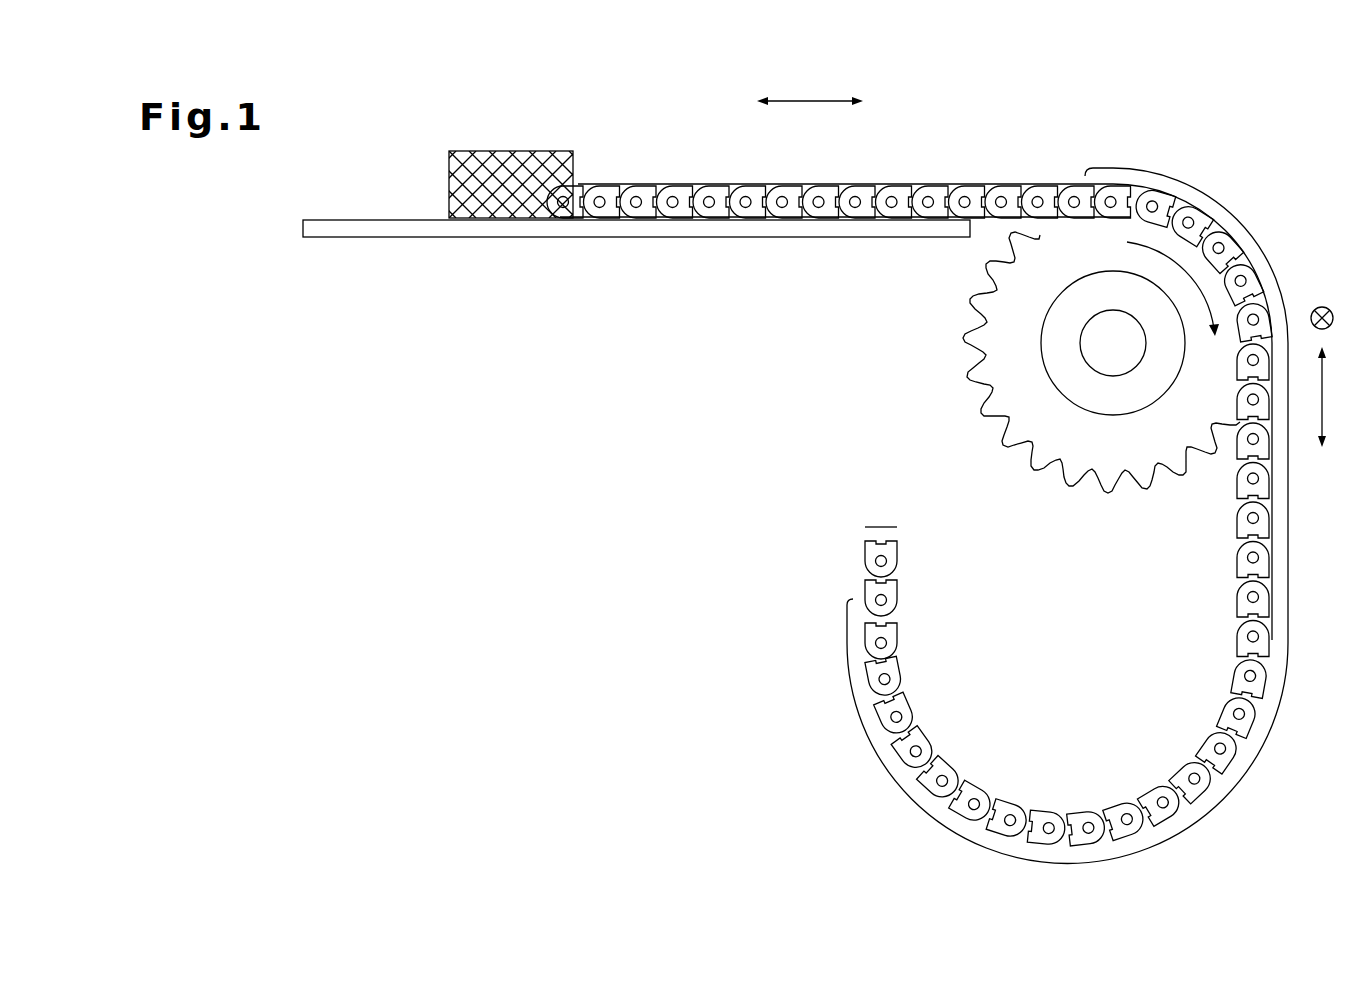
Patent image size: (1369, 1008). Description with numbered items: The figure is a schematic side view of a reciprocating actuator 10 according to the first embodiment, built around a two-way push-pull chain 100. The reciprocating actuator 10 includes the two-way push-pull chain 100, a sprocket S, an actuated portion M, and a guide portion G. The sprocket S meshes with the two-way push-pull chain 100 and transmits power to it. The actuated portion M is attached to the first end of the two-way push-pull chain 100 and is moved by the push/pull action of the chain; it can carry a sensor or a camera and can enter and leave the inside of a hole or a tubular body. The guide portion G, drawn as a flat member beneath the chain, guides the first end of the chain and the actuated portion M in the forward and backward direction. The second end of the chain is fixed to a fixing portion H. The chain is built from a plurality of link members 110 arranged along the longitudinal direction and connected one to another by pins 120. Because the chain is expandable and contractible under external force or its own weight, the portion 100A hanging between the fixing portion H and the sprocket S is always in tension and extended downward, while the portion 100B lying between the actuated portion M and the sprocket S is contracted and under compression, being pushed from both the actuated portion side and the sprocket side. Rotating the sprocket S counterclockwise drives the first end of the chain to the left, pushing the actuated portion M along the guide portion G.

The reciprocating actuator 10 is at (378, 110).
The two-way push-pull chain 100 is at (1068, 163).
The portion of the chain between the fixing portion and the sprocket 100A is at (1288, 495).
The portion of the chain between the actuated portion and the sprocket 100B is at (1043, 176).
The link member 110 is at (862, 214).
The pin 120 is at (779, 210).
The actuated portion M is at (559, 143).
The guide portion G is at (415, 243).
The sprocket S is at (998, 360).
The fixing portion H is at (850, 527).